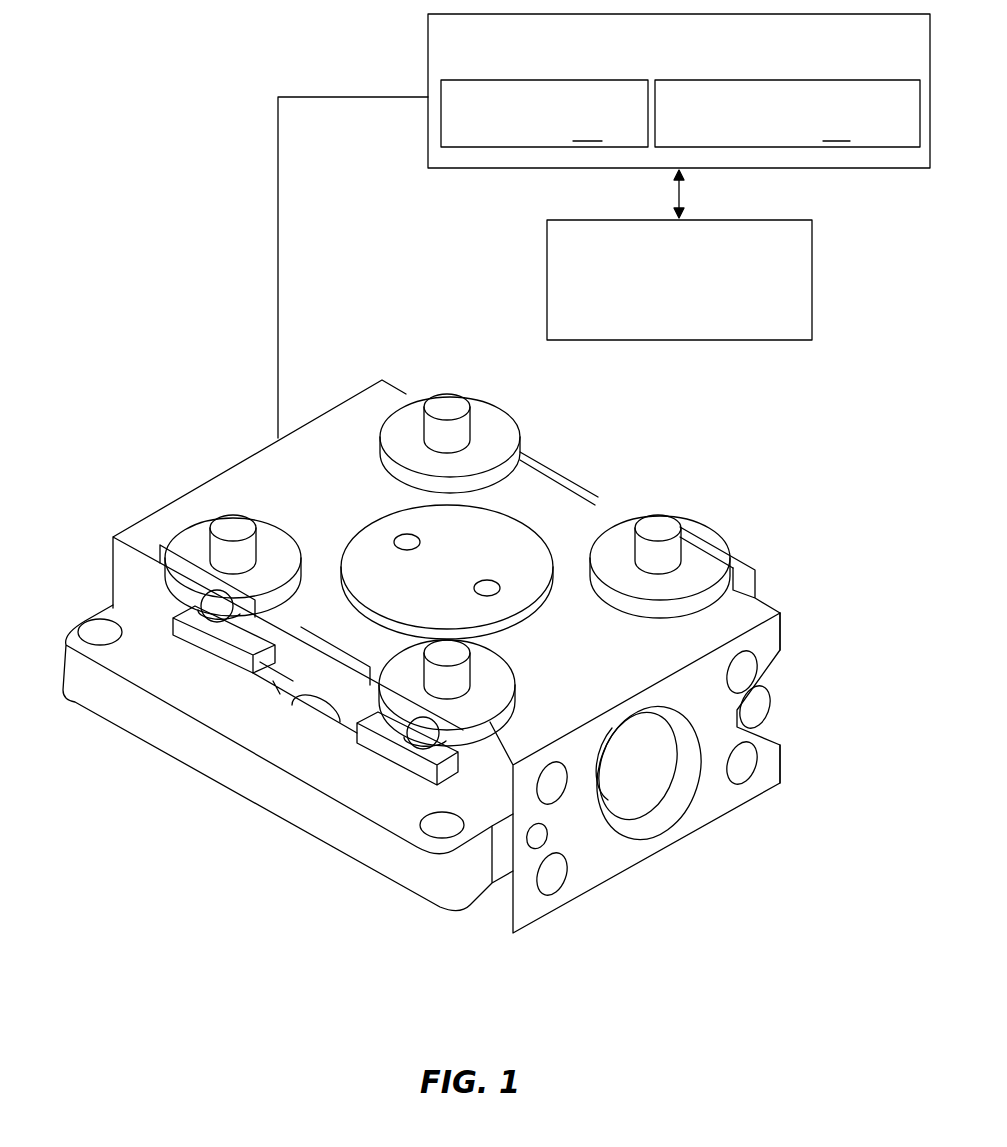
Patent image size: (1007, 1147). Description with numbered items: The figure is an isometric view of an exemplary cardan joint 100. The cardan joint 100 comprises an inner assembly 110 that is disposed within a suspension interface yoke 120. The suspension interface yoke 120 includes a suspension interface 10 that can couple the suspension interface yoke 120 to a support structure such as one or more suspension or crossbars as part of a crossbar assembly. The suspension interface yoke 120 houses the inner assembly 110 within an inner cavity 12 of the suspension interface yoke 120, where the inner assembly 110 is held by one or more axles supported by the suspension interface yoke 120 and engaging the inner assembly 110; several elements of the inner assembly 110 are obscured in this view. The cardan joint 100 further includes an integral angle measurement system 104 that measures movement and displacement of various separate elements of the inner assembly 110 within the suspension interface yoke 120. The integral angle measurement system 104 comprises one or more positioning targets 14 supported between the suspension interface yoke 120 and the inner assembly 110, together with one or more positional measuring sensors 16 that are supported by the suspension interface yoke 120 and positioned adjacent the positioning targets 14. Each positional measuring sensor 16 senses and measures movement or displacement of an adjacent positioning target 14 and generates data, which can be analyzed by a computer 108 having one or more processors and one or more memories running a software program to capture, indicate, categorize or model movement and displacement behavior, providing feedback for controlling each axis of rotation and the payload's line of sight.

The cardan joint 100 is at (217, 410).
The integral angle measurement system 104 is at (918, 54).
The computer 108 is at (767, 258).
The suspension interface 10 is at (650, 810).
The inner cavity 12 is at (112, 582).
The positioning target 14 is at (220, 612).
The positional measuring sensor 16 is at (227, 530).
The inner assembly 110 is at (217, 770).
The suspension interface yoke 120 is at (747, 615).